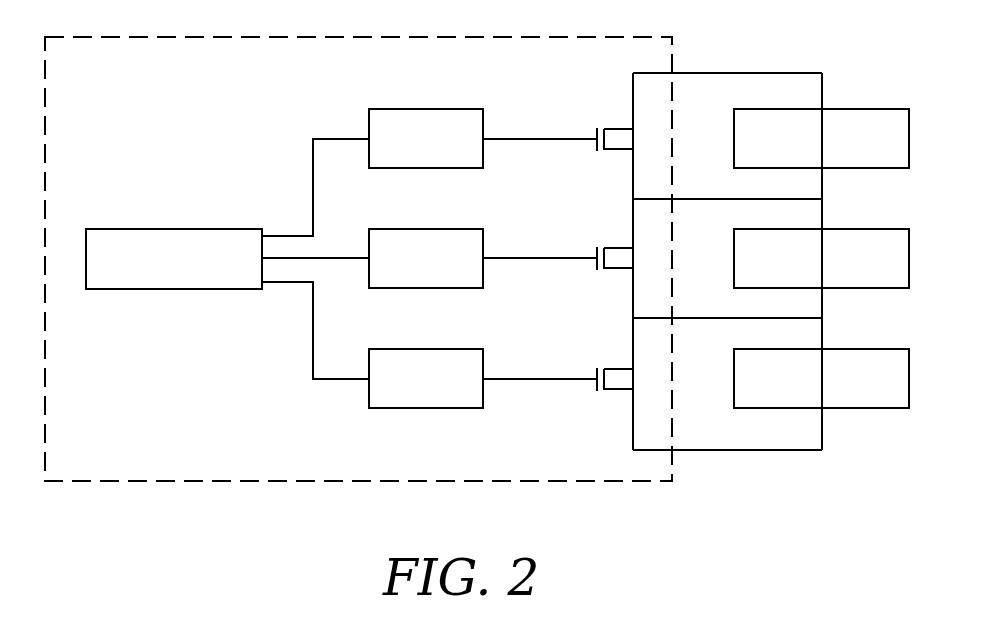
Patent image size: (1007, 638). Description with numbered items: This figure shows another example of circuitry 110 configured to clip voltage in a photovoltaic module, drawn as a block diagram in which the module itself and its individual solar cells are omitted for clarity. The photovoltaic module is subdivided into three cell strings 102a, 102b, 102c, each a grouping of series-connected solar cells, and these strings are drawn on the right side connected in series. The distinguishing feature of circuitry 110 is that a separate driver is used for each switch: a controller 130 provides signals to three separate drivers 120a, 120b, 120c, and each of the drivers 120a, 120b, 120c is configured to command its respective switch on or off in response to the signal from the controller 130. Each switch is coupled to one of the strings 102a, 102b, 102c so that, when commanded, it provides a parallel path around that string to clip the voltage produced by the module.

The circuitry 110 is at (122, 78).
The controller 130 is at (205, 229).
The driver 120a is at (437, 109).
The driver 120b is at (437, 229).
The driver 120c is at (437, 349).
The string 102a is at (897, 109).
The string 102b is at (897, 229).
The string 102c is at (897, 349).